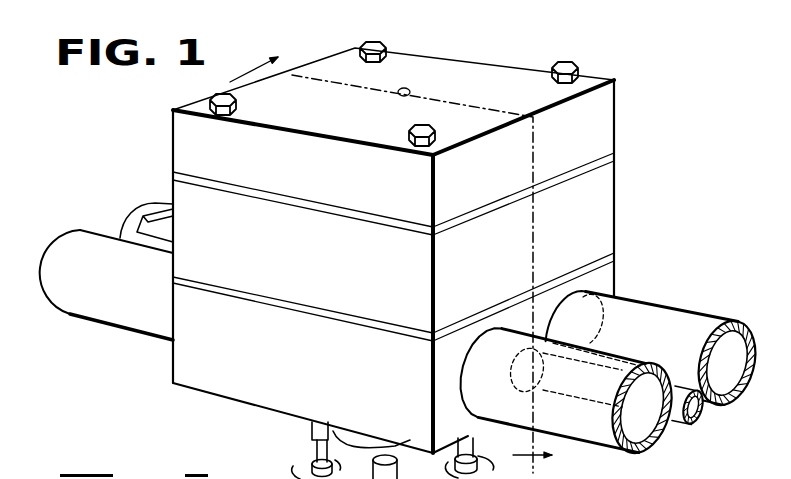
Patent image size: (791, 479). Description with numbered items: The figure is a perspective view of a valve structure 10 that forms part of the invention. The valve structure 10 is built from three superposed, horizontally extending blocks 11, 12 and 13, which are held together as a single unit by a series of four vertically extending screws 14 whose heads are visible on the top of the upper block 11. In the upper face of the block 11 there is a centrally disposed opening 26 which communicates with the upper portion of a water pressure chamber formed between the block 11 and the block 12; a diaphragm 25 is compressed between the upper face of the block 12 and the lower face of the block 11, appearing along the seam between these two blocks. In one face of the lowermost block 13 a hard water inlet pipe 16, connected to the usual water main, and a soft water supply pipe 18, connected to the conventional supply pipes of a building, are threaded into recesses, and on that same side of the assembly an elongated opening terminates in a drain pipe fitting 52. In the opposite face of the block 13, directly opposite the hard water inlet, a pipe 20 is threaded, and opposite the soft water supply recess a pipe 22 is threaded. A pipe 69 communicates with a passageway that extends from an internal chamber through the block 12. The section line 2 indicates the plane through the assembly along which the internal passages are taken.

The section line 2- 2 is at (391, 259).
The valve structure 10 is at (625, 185).
The block 11 is at (603, 115).
The block 12 is at (607, 230).
The block 13 is at (612, 275).
The screws 14 is at (200, 115).
The hard water inlet pipe 16 is at (687, 327).
The soft water supply pipe 18 is at (593, 437).
The pipe 20 is at (143, 215).
The pipe 22 is at (70, 240).
The diaphragm 25 is at (252, 192).
The centrally disposed opening 26 is at (412, 92).
The drain pipe fitting 52 is at (693, 418).
The pipe 69 is at (160, 227).